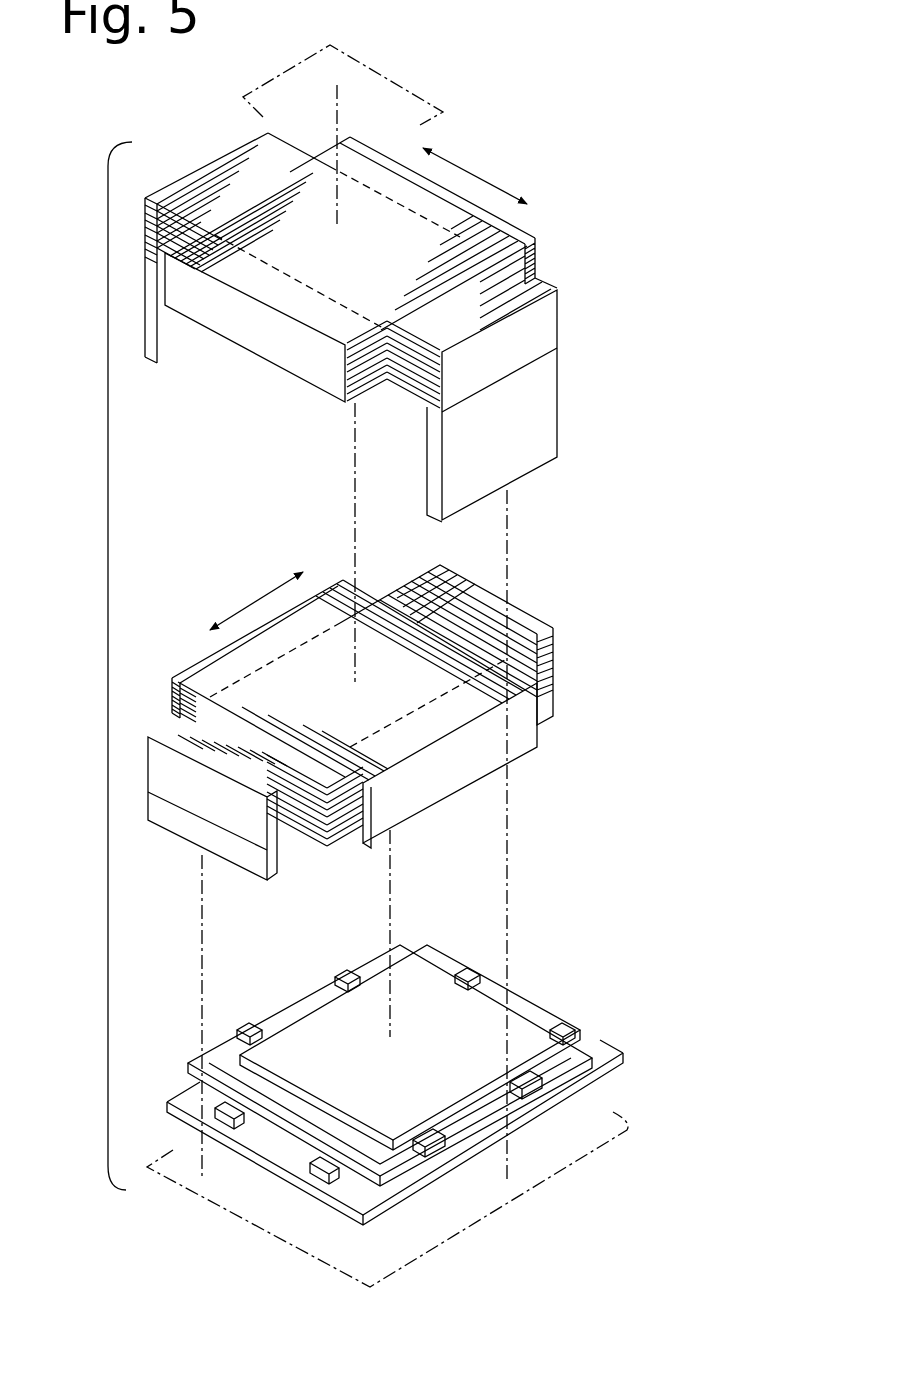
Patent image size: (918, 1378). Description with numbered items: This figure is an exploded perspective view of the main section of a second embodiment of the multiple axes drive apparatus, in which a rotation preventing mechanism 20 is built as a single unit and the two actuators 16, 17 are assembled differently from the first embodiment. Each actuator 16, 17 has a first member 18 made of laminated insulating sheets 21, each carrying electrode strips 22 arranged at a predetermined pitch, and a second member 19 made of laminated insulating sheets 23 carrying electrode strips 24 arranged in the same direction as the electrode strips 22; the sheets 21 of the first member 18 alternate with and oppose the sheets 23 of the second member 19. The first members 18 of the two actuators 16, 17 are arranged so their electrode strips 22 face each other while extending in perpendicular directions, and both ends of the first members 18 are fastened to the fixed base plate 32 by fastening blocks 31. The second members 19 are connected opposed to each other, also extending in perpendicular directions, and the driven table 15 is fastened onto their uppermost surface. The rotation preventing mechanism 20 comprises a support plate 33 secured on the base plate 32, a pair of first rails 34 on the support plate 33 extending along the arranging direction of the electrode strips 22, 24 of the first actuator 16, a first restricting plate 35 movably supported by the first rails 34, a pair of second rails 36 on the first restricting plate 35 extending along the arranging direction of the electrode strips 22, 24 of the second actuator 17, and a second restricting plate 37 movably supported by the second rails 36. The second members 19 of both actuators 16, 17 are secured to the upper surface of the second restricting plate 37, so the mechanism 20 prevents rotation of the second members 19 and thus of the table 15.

The table 15 is at (287, 72).
The first actuator 16 is at (178, 673).
The second actuator 17 is at (162, 184).
The first member 18 is at (606, 311).
The second member 19 is at (257, 356).
The rotation preventing mechanism 20 is at (184, 1053).
The sheet 21 is at (411, 396).
The electrode strip 22 is at (495, 308).
The sheet 23 is at (366, 388).
The electrode strip 24 is at (437, 260).
The fastening block 31 is at (556, 386).
The base plate 32 is at (202, 1200).
The support plate 33 is at (408, 1194).
The first rails 34 is at (231, 1137).
The first restricting plate 35 is at (477, 1136).
The second rails 36 is at (238, 1025).
The second restricting plate 37 is at (432, 982).